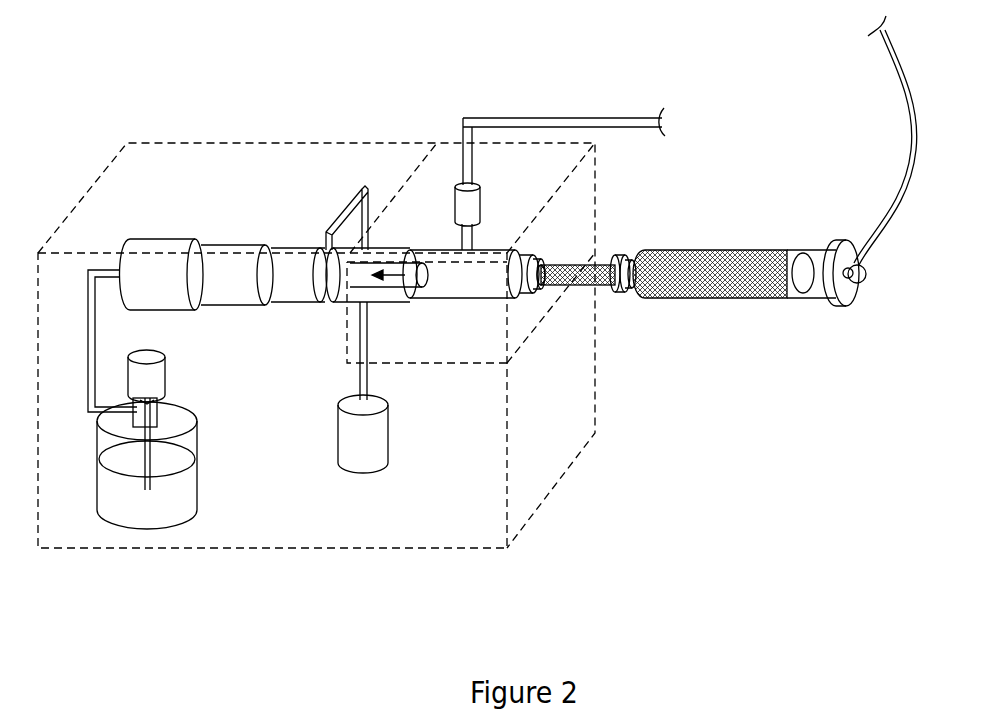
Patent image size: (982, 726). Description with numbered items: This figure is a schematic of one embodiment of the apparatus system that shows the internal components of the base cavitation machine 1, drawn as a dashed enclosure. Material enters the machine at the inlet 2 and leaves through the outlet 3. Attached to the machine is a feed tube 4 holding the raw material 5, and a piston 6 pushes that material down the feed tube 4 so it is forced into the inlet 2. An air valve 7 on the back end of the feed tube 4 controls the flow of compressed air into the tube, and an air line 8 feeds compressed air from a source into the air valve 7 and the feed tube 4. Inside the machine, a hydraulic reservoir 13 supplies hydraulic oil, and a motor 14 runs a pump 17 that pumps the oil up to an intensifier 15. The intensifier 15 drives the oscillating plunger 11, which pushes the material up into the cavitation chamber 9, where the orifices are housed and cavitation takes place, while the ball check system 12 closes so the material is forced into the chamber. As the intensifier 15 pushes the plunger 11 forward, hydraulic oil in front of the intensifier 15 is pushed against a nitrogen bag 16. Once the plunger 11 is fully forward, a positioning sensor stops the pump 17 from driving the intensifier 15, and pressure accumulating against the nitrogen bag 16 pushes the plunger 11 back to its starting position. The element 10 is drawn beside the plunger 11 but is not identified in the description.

The base cavitation machine 1 is at (292, 550).
The inlet 2 is at (586, 288).
The outlet 3 is at (632, 117).
The feed tube 4 is at (821, 300).
The raw material 5 is at (714, 276).
The piston 6 is at (795, 253).
The air valve 7 is at (866, 273).
The air line 8 is at (908, 118).
The cavitation chamber 9 is at (462, 212).
The drive cylinder 10 is at (476, 299).
The oscillating plunger 11 is at (390, 284).
The ball check system 12 is at (530, 258).
The hydraulic reservoir 13 is at (185, 488).
The motor 14 is at (158, 378).
The intensifier 15 is at (325, 224).
The nitrogen bag 16 is at (380, 434).
The pump 17 is at (163, 412).